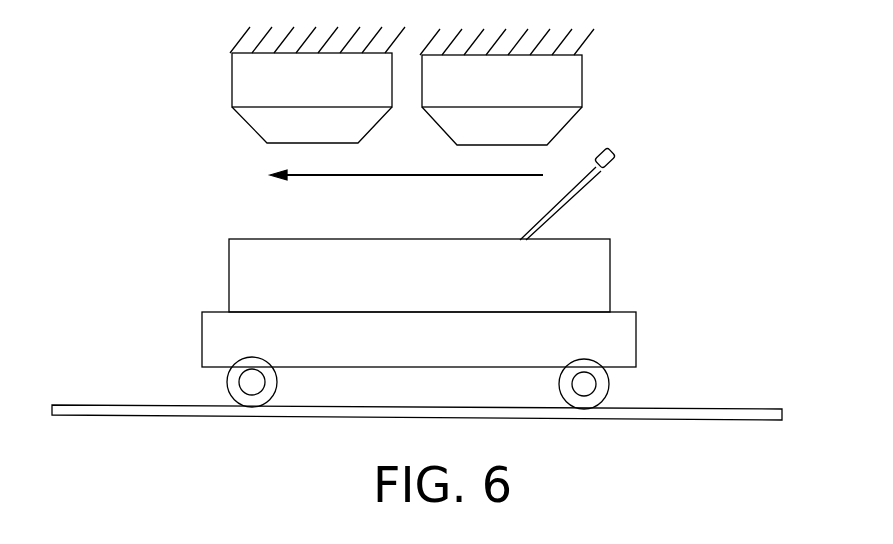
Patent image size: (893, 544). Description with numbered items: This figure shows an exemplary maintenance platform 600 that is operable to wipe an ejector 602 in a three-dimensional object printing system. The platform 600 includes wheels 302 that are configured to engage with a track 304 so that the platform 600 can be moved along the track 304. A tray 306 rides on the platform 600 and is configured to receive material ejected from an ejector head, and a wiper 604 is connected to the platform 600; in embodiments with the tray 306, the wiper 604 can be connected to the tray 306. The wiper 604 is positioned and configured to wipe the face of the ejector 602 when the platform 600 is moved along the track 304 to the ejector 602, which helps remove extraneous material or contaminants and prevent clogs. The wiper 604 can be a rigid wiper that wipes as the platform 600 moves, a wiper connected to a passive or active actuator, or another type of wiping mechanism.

The ejector 602 is at (248, 32).
The wiper 604 is at (575, 197).
The maintenance platform 600 is at (455, 299).
The tray 306 is at (259, 238).
The wheels 302 is at (226, 382).
The track 304 is at (108, 404).